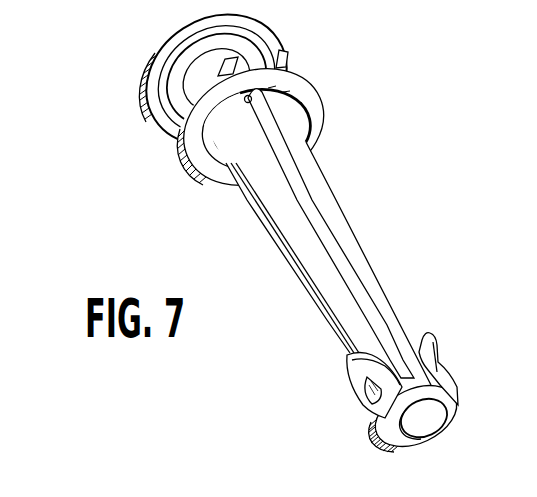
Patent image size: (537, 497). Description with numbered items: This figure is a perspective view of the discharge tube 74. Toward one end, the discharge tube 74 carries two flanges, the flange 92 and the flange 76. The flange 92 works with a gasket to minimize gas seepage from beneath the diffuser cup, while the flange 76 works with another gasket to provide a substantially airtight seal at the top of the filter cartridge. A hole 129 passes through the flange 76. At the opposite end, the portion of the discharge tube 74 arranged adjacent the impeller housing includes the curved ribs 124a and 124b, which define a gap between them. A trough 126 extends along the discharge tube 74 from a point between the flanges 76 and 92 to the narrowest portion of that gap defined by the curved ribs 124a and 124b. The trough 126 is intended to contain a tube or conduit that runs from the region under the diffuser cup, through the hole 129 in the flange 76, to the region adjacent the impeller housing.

The flange 92 is at (148, 110).
The hole 129 is at (284, 54).
The flange 76 is at (312, 106).
The discharge tube 74 is at (366, 259).
The trough 126 is at (300, 192).
The curved rib 124a is at (355, 381).
The curved rib 124b is at (440, 357).